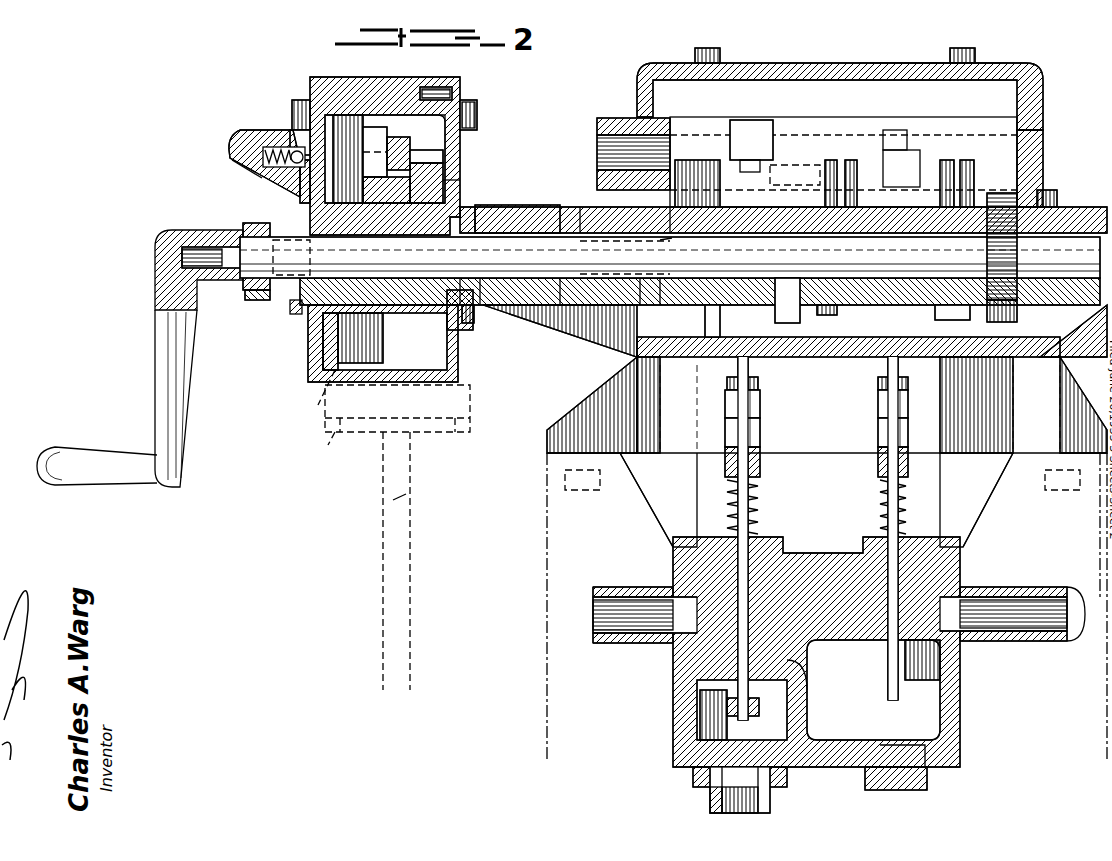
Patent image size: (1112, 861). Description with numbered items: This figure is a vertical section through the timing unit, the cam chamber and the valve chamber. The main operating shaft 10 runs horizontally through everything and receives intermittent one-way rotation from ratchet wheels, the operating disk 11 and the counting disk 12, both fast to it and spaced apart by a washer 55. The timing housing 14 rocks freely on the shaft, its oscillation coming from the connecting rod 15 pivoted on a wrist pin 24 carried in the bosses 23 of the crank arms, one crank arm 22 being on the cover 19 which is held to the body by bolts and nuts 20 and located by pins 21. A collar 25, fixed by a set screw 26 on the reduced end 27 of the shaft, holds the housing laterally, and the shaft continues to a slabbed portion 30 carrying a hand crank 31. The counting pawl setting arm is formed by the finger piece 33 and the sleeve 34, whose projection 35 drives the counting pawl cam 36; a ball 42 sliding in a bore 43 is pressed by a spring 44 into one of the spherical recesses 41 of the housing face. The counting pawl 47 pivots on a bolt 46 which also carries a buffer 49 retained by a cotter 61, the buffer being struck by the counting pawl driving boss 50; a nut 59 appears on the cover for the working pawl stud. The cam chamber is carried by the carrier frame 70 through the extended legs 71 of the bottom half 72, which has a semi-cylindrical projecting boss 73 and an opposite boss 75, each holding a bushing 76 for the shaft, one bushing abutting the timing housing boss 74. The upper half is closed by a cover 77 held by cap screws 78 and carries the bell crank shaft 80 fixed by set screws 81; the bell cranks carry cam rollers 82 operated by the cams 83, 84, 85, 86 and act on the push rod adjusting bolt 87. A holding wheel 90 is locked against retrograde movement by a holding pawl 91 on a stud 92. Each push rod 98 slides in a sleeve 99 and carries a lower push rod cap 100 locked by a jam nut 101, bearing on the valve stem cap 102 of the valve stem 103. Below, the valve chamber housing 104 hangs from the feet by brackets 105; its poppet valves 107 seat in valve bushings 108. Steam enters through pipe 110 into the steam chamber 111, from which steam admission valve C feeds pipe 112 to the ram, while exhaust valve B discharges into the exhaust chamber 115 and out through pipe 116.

The main operating shaft 10 is at (262, 291).
The operating disk 11 is at (448, 187).
The counting disk 12 is at (444, 177).
The timing housing 14 is at (396, 79).
The connecting rod 15 is at (420, 502).
The cover 19 is at (445, 166).
The bolts and nuts 20 is at (478, 110).
The pins 21 is at (452, 91).
The crank arm 22 is at (446, 355).
The bosses 23 is at (360, 441).
The wrist pin 24 is at (472, 394).
The collar 25 is at (272, 302).
The set screw 26 is at (245, 234).
The reduced end 27 is at (245, 292).
The slabbed portion 30 is at (233, 270).
The hand crank 31 is at (150, 359).
The finger piece 33 is at (258, 176).
The sleeve 34 is at (300, 352).
The projection 35 is at (317, 442).
The counting pawl cam 36 is at (372, 186).
The spherical recesses 41 is at (300, 112).
The ball 42 is at (286, 170).
The bore 43 is at (296, 130).
The spring 44 is at (268, 136).
The bolt 46 is at (375, 128).
The counting pawl 47 is at (411, 150).
The buffer 49 is at (345, 116).
The counting pawl driving boss 50 is at (300, 346).
The washer 55 is at (463, 350).
The nut 59 is at (492, 207).
The cotter 61 is at (316, 115).
The carrier frame 70 is at (680, 512).
The extended legs 71 is at (1074, 526).
The bottom half of cam chamber housing 72 is at (1052, 348).
The semi-cylindrical projecting boss 73 is at (575, 346).
The timing housing boss 74 is at (472, 323).
The opposite boss 75 is at (1076, 307).
The bushing 76 is at (520, 322).
The cover 77 is at (746, 66).
The cap screws 78 is at (976, 57).
The bell crank shaft 80 is at (598, 154).
The set screws 81 is at (1032, 129).
The cam rollers 82 is at (697, 189).
The cam 83 is at (625, 257).
The cam 84 is at (801, 315).
The cam 85 is at (840, 321).
The cam 86 is at (984, 320).
The push rod adjusting bolt 87 is at (760, 167).
The holding wheel 90 is at (990, 321).
The holding pawl 91 is at (876, 65).
The stud 92 is at (985, 233).
The push rod 98 is at (750, 371).
The sleeve 99 is at (730, 318).
The lower push rod cap 100 is at (761, 404).
The jam nut 101 is at (762, 386).
The valve stem cap 102 is at (877, 431).
The valve stem 103 is at (762, 456).
The valve chamber housing 104 is at (962, 700).
The brackets 105 is at (984, 510).
The valves 107 is at (760, 712).
The valve bushing 108 is at (805, 647).
The pipe 110 is at (772, 797).
The steam chamber 111 is at (700, 726).
The pipe 112 is at (620, 640).
The exhaust chamber 115 is at (945, 650).
The exhaust pipe 116 is at (1002, 590).
The exhaust valve B is at (842, 720).
The steam admission valve C is at (670, 695).